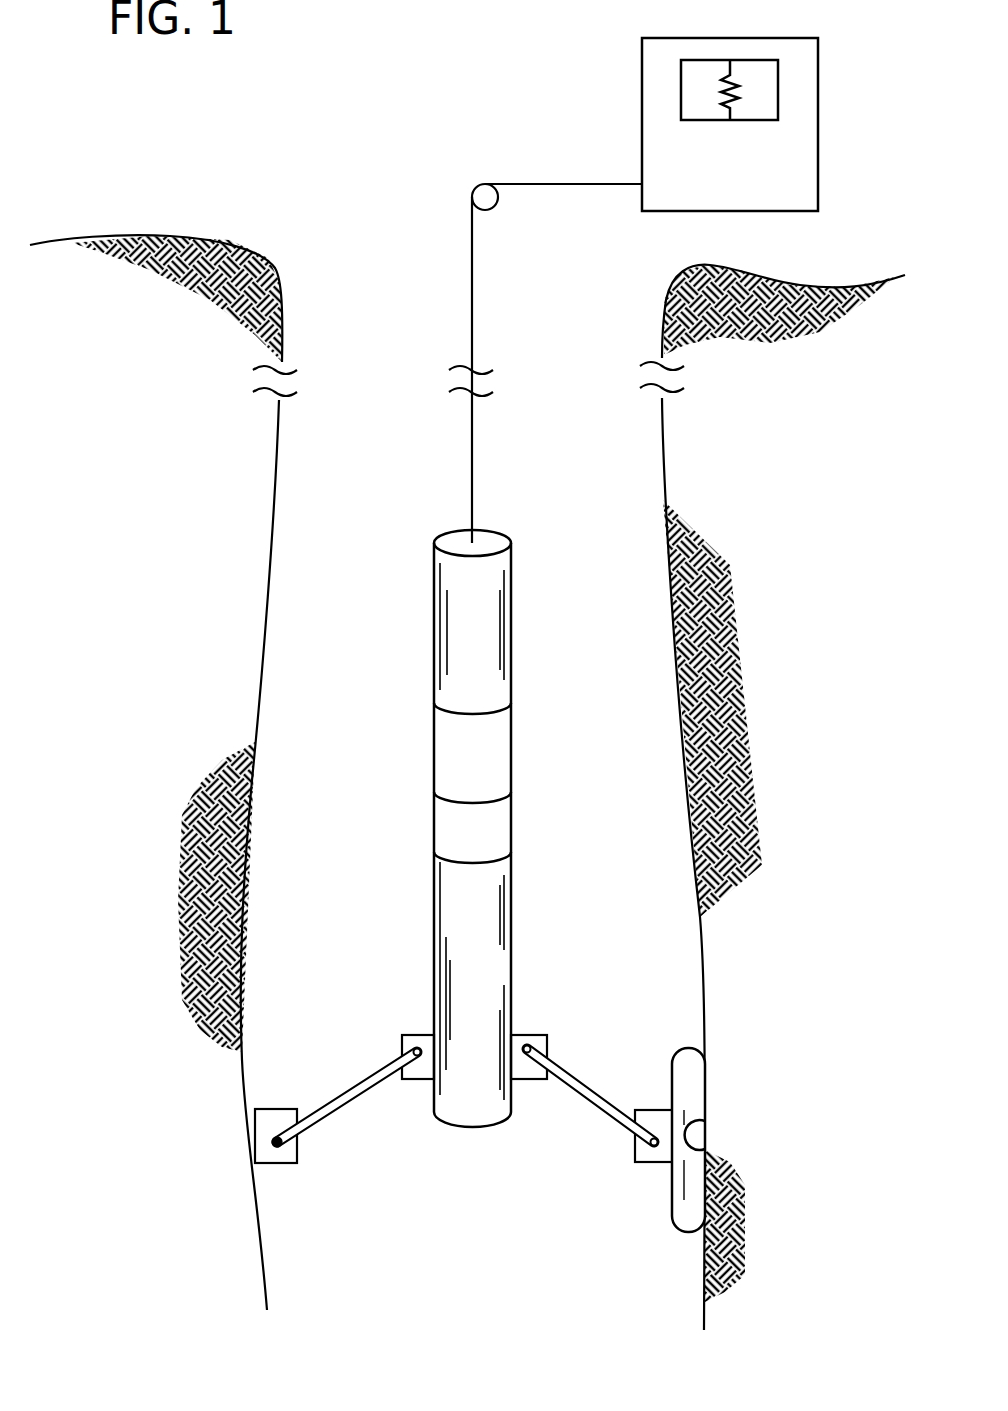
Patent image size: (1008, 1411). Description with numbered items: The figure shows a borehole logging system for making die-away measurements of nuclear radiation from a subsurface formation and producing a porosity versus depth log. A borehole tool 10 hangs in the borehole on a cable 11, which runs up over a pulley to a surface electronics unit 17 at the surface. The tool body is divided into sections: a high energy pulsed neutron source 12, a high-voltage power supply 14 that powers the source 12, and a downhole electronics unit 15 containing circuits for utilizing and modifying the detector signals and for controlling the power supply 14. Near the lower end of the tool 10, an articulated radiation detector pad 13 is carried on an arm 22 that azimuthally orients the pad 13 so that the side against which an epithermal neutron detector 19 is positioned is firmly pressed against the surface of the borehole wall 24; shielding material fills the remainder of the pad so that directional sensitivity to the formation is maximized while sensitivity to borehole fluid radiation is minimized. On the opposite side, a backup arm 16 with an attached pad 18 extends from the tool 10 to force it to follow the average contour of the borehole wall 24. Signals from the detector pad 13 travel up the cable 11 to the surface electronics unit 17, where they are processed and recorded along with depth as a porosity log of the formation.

The borehole tool 10 is at (504, 816).
The cable 11 is at (473, 447).
The high energy pulsed neutron source 12 is at (455, 847).
The articulated radiation detector pad 13 is at (690, 1063).
The high-voltage power supply 14 is at (455, 781).
The downhole electronics unit 15 is at (455, 671).
The backup arm 16 is at (350, 1085).
The surface electronics unit 17 is at (818, 147).
The pad 18 is at (296, 1163).
The epithermal neutron detector 19 is at (700, 1138).
The arm 22 is at (580, 1076).
The borehole wall 24 is at (666, 478).